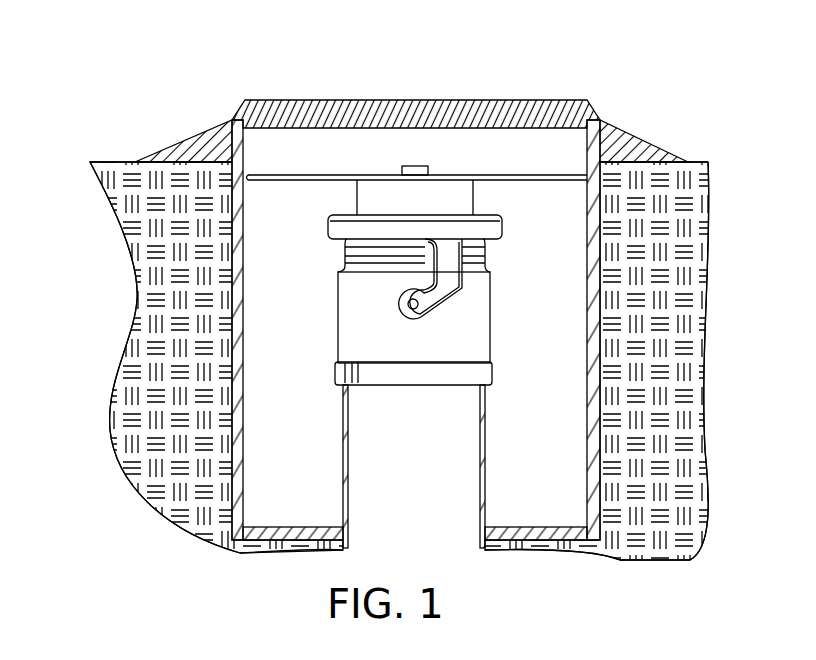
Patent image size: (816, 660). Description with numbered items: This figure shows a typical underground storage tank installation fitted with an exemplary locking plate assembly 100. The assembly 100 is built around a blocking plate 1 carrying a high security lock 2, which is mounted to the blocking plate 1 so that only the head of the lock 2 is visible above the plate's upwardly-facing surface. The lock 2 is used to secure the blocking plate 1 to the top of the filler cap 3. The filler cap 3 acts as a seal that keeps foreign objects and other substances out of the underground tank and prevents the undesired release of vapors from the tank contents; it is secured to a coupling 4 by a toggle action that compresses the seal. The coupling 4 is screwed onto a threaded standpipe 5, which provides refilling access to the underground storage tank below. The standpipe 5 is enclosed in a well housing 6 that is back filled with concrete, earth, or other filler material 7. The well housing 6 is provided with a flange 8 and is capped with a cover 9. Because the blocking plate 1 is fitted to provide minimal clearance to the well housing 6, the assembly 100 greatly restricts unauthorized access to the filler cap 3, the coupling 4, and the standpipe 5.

The locking plate assembly 100 is at (409, 283).
The blocking plate 1 is at (287, 172).
The high security lock 2 is at (422, 165).
The filler cap 3 is at (328, 218).
The coupling 4 is at (338, 290).
The standpipe 5 is at (342, 467).
The well housing 6 is at (603, 493).
The filler material 7 is at (663, 417).
The flange 8 is at (625, 145).
The cover 9 is at (597, 119).